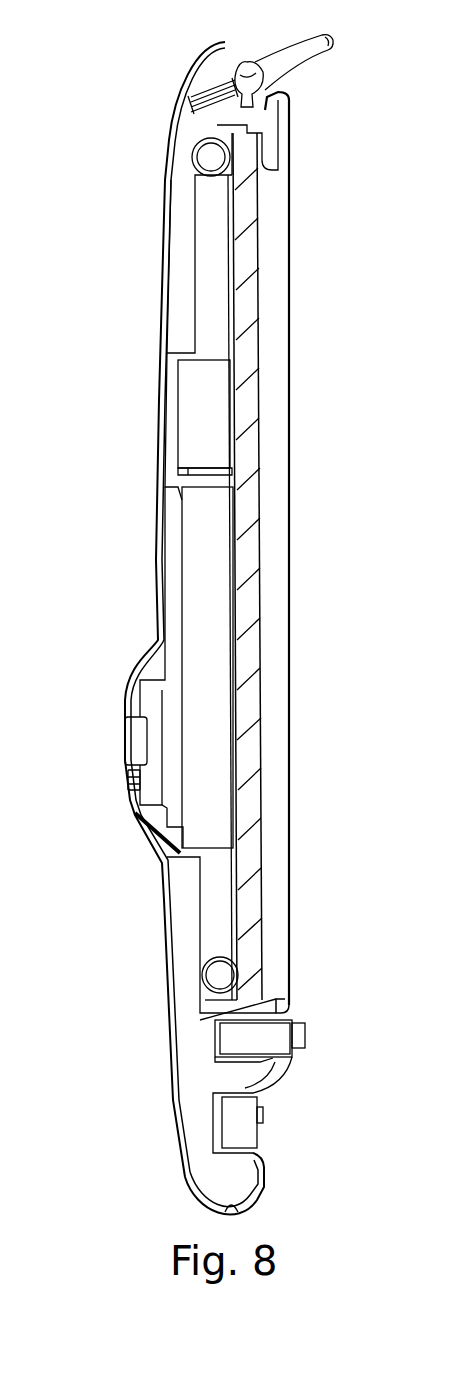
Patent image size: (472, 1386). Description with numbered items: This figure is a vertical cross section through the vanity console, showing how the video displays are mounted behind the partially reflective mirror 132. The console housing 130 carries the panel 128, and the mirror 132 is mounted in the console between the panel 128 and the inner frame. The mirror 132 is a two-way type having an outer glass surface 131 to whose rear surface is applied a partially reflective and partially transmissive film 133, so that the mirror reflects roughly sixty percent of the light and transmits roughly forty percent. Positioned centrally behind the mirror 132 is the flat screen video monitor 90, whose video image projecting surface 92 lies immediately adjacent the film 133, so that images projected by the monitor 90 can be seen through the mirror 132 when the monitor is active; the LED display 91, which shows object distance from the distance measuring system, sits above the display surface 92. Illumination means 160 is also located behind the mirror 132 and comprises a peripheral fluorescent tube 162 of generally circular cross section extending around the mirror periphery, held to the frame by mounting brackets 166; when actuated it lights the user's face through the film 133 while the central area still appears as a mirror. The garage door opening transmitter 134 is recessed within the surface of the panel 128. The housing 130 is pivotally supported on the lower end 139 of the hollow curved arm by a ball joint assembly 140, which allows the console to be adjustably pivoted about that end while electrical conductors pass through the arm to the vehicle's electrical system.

The ball joint assembly 140 is at (258, 64).
The lower end of curved arm 139 is at (333, 46).
The mounting brackets 166 is at (197, 143).
The illumination means 160 is at (171, 175).
The fluorescent tube 162 is at (228, 174).
The partially reflective and partially transmissive film 133 is at (235, 275).
The outer glass surface 131 is at (249, 326).
The mirror 132 is at (268, 383).
The LED display 91 is at (192, 405).
The panel 128 is at (155, 502).
The video monitor 90 is at (193, 590).
The video image projecting surface 92 is at (238, 632).
The trainable garage door opening transmitter 134 is at (148, 778).
The housing 130 is at (264, 1190).